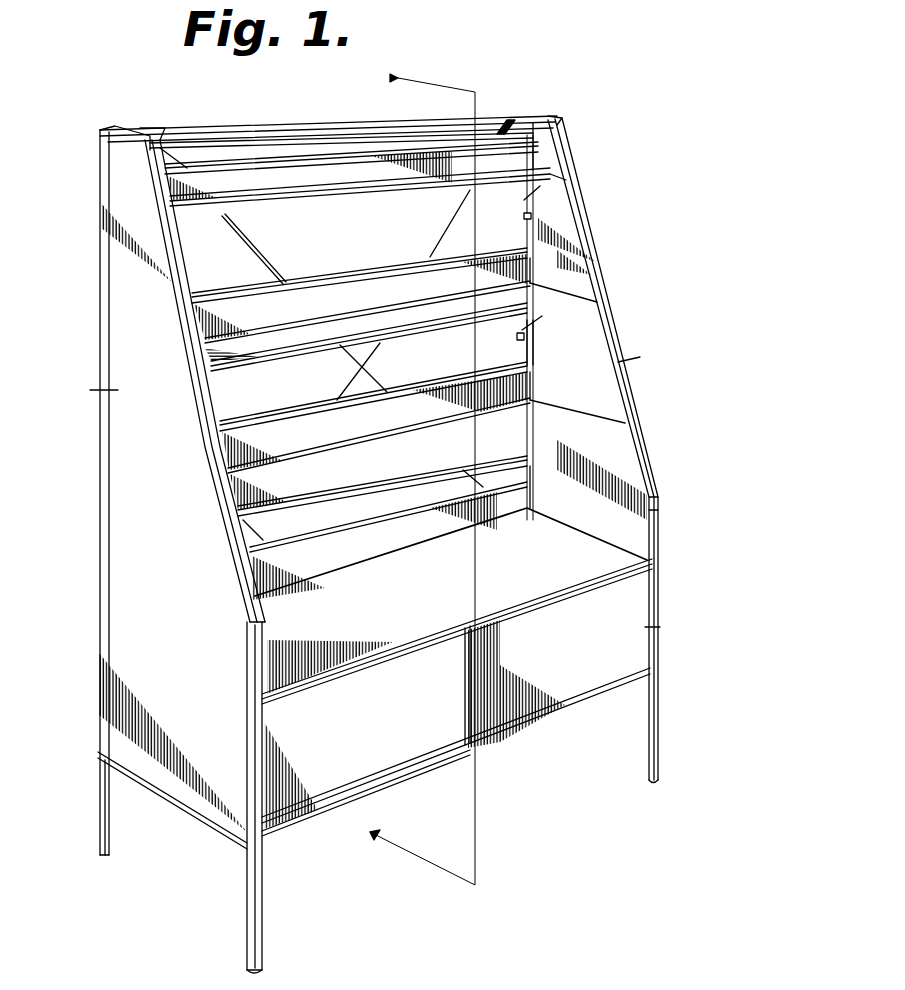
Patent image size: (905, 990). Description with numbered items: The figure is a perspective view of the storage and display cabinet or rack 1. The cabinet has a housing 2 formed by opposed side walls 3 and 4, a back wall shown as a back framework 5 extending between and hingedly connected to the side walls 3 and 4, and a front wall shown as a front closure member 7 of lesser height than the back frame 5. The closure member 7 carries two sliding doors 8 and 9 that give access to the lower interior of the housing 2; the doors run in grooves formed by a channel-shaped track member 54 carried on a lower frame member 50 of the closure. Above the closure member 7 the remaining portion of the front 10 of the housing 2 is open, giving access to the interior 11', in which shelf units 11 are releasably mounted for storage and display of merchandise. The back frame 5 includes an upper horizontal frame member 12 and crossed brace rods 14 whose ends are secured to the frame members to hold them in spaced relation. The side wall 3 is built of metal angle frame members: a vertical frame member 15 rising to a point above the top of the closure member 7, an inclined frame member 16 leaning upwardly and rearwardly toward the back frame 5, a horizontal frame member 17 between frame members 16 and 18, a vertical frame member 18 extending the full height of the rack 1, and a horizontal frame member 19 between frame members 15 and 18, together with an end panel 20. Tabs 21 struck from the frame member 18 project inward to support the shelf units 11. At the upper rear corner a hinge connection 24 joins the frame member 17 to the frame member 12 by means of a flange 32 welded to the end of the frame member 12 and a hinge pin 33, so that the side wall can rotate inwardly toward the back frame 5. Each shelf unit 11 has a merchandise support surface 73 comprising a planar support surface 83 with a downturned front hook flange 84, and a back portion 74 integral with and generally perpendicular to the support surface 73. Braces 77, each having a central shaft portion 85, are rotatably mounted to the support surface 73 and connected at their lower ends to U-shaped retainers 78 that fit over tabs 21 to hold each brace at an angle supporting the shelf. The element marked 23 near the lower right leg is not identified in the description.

The storage and display cabinet 1 is at (592, 232).
The housing 2 is at (648, 458).
The side wall 3 is at (610, 318).
The side wall 4 is at (272, 477).
The back framework 5 is at (286, 122).
The front closure member 7 is at (516, 742).
The sliding door 8 is at (590, 705).
The sliding door 9 is at (424, 768).
The front 10 is at (652, 509).
The shelf unit 11 is at (459, 546).
The interior 11' is at (636, 356).
The upper horizontal frame member 12 is at (209, 126).
The brace rod 14 is at (265, 262).
The frame member 15 is at (652, 654).
The frame member 16 is at (628, 405).
The frame member 17 is at (138, 146).
The frame member 18 is at (100, 790).
The frame member 19 is at (190, 800).
The end panel 20 is at (132, 583).
The tab 21 is at (530, 337).
The right leg lower end 23 is at (650, 750).
The hinge connection 24 is at (552, 118).
The flange 32 is at (520, 118).
The hinge pin 33 is at (148, 128).
The lower frame member 50 is at (309, 822).
The track member 54 is at (377, 675).
The merchandise support surface 73 is at (408, 563).
The back portion 74 is at (370, 283).
The brace 77 is at (540, 322).
The retainer 78 is at (517, 337).
The planar support surface 83 is at (380, 441).
The front hook flange 84 is at (418, 340).
The central shaft portion 85 is at (541, 197).